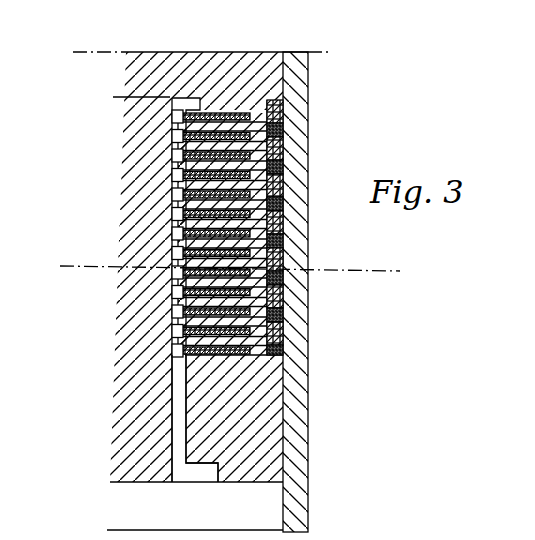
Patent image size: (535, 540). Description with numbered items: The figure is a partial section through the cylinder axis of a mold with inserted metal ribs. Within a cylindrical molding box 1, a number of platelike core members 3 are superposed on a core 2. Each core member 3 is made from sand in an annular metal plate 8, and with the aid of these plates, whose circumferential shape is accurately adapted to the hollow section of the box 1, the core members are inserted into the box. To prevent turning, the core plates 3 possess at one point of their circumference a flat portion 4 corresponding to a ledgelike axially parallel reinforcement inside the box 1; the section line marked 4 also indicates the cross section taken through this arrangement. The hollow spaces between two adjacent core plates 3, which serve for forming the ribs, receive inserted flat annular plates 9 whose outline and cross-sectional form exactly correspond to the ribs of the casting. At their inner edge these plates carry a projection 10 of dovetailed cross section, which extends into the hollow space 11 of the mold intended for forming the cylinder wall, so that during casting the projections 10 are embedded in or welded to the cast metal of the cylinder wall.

The cylindrical molding box 1 is at (288, 347).
The core 2 is at (248, 385).
The platelike core members 3 is at (185, 193).
The flat portion 4 is at (72, 292).
The annular metal plate 8 is at (277, 137).
The flat annular plates 9 is at (180, 335).
The projection 10 is at (177, 165).
The hollow space 11 is at (182, 385).